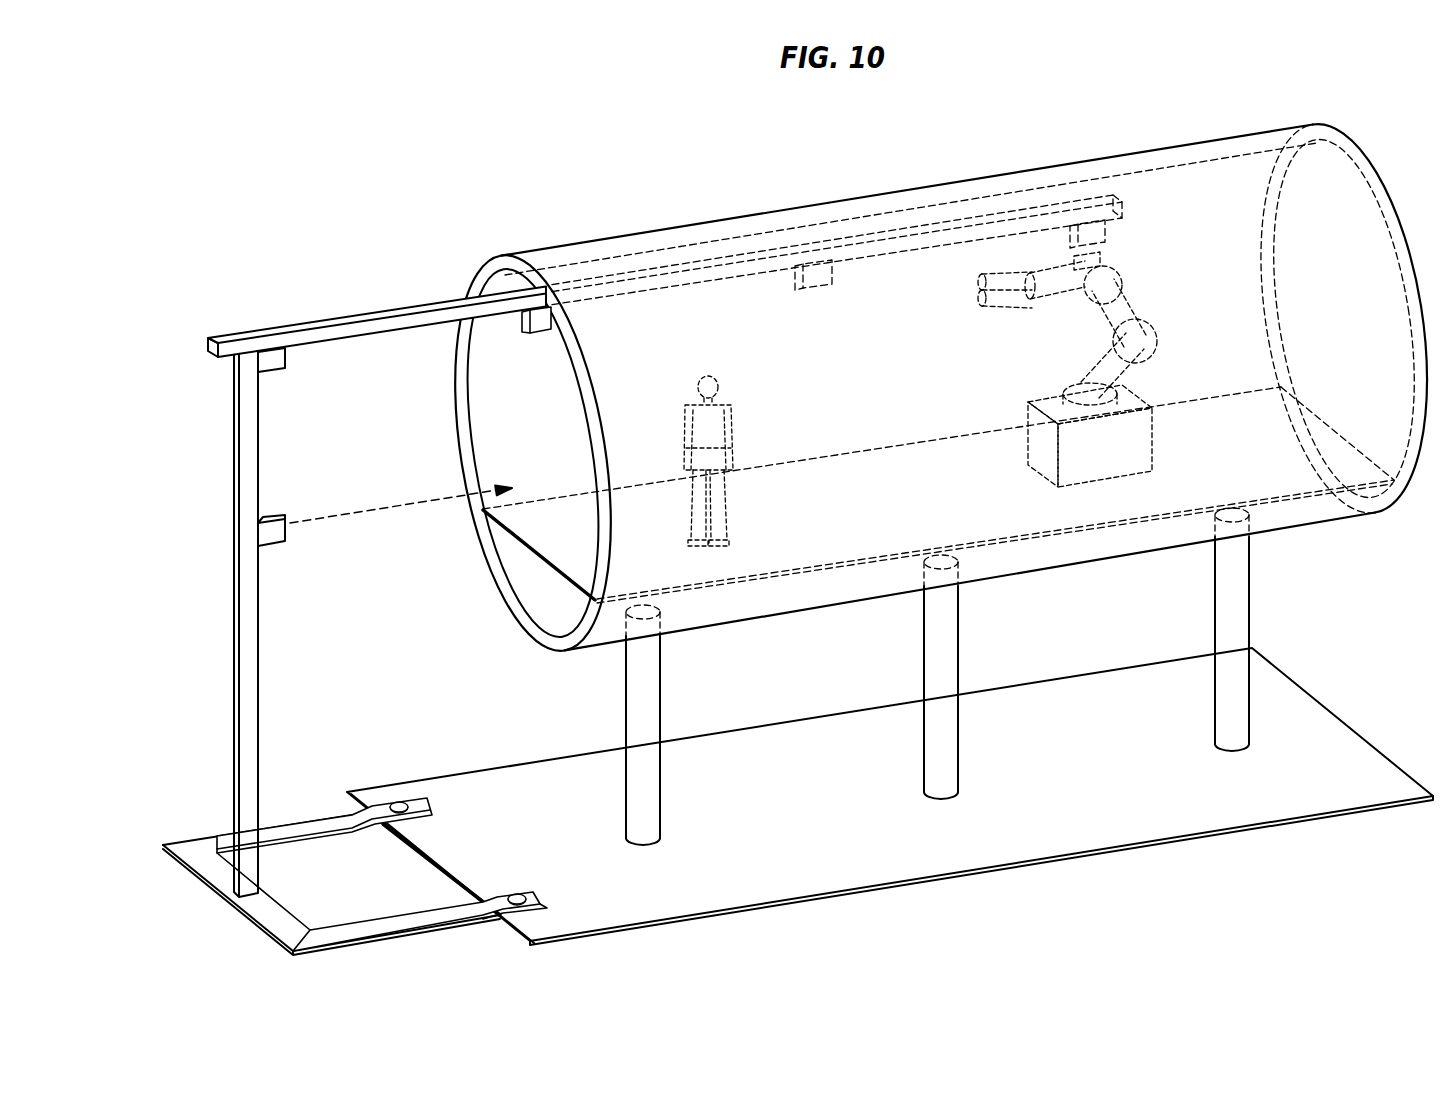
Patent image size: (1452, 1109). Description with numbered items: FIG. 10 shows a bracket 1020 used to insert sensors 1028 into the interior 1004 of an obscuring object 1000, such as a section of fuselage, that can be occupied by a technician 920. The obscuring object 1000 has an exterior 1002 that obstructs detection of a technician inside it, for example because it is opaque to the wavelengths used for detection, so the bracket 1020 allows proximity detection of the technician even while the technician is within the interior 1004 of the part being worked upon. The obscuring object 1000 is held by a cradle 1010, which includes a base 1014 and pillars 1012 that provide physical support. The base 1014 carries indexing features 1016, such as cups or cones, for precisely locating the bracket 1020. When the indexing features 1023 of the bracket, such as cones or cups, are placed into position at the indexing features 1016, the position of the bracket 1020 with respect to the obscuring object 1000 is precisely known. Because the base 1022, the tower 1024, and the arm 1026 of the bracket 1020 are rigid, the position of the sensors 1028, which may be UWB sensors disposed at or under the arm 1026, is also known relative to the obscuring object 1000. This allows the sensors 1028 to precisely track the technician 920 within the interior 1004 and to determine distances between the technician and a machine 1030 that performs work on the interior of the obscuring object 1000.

The obscuring object 1000 is at (620, 148).
The exterior 1002 is at (1175, 147).
The interior 1004 is at (538, 604).
The technician 920 is at (735, 432).
The machine 1030 is at (1125, 292).
The pillars 1012 is at (959, 636).
The cradle 1010 is at (1012, 898).
The bracket 1020 is at (158, 780).
The base 1022 is at (253, 922).
The base 1014 is at (420, 852).
The indexing features 1023 is at (432, 806).
The indexing features 1016 is at (399, 802).
The tower 1024 is at (233, 648).
The arm 1026 is at (358, 315).
The sensors 1028 is at (535, 334).